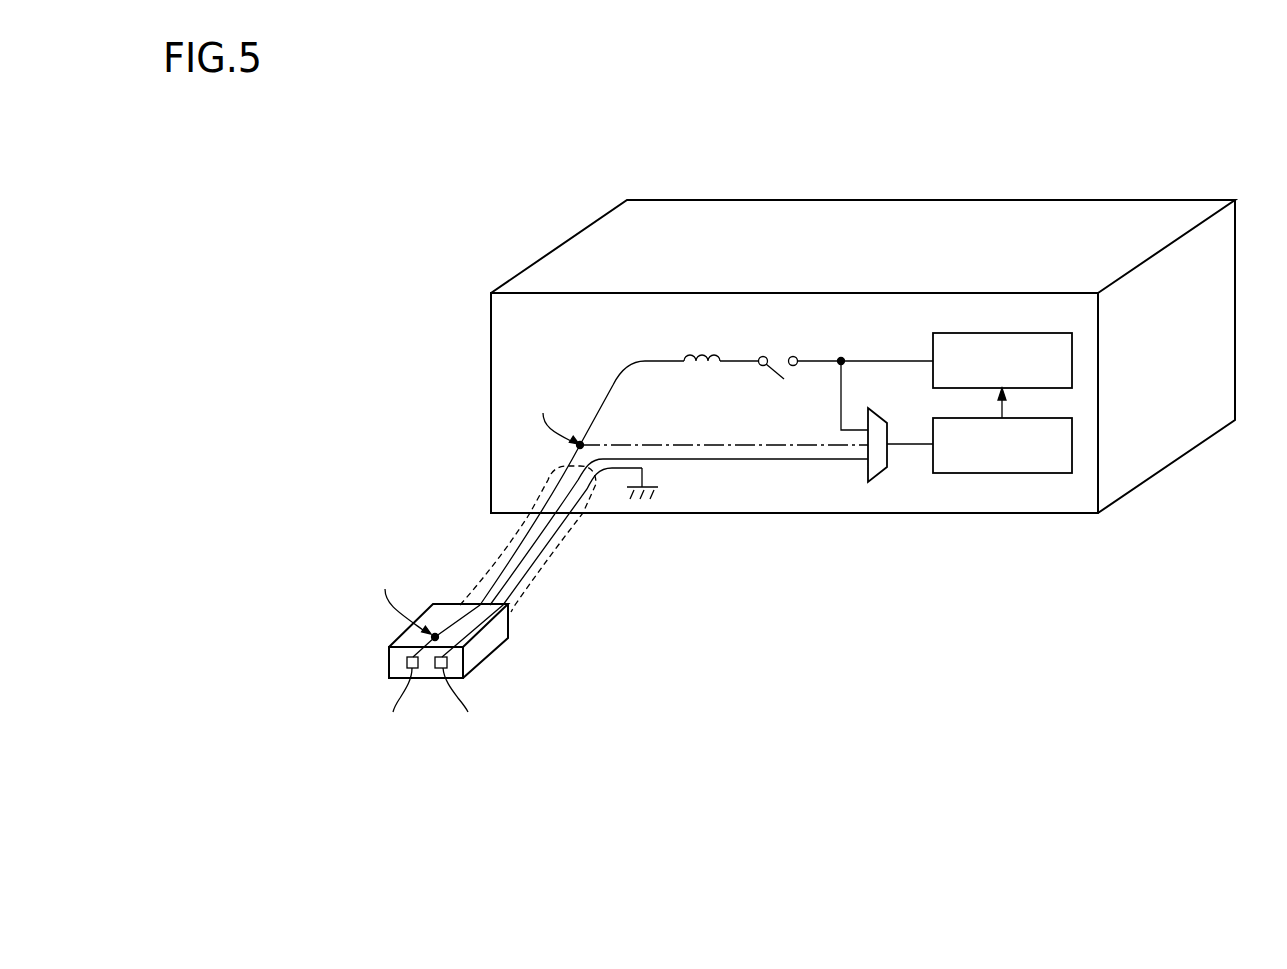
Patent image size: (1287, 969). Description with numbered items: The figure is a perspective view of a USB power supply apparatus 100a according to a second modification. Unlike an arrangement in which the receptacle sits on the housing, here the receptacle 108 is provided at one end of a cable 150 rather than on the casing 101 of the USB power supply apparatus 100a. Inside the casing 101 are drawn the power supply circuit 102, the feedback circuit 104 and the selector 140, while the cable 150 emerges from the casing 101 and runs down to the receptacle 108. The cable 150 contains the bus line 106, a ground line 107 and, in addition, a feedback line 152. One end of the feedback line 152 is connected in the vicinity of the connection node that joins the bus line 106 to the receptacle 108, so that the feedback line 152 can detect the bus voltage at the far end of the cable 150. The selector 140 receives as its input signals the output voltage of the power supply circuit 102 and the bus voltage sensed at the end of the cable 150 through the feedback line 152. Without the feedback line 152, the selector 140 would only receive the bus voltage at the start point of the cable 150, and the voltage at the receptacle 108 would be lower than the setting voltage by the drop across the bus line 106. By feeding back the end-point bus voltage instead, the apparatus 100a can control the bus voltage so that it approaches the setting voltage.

The USB power supply apparatus 100a is at (808, 766).
The casing 101 is at (491, 388).
The power supply circuit 102 is at (1022, 333).
The feedback circuit 104 is at (1020, 473).
The bus line 106 is at (498, 567).
The ground line 107 is at (557, 534).
The receptacle 108 is at (490, 656).
The selector 140 is at (881, 471).
The cable 150 is at (557, 566).
The feedback line 152 is at (509, 569).